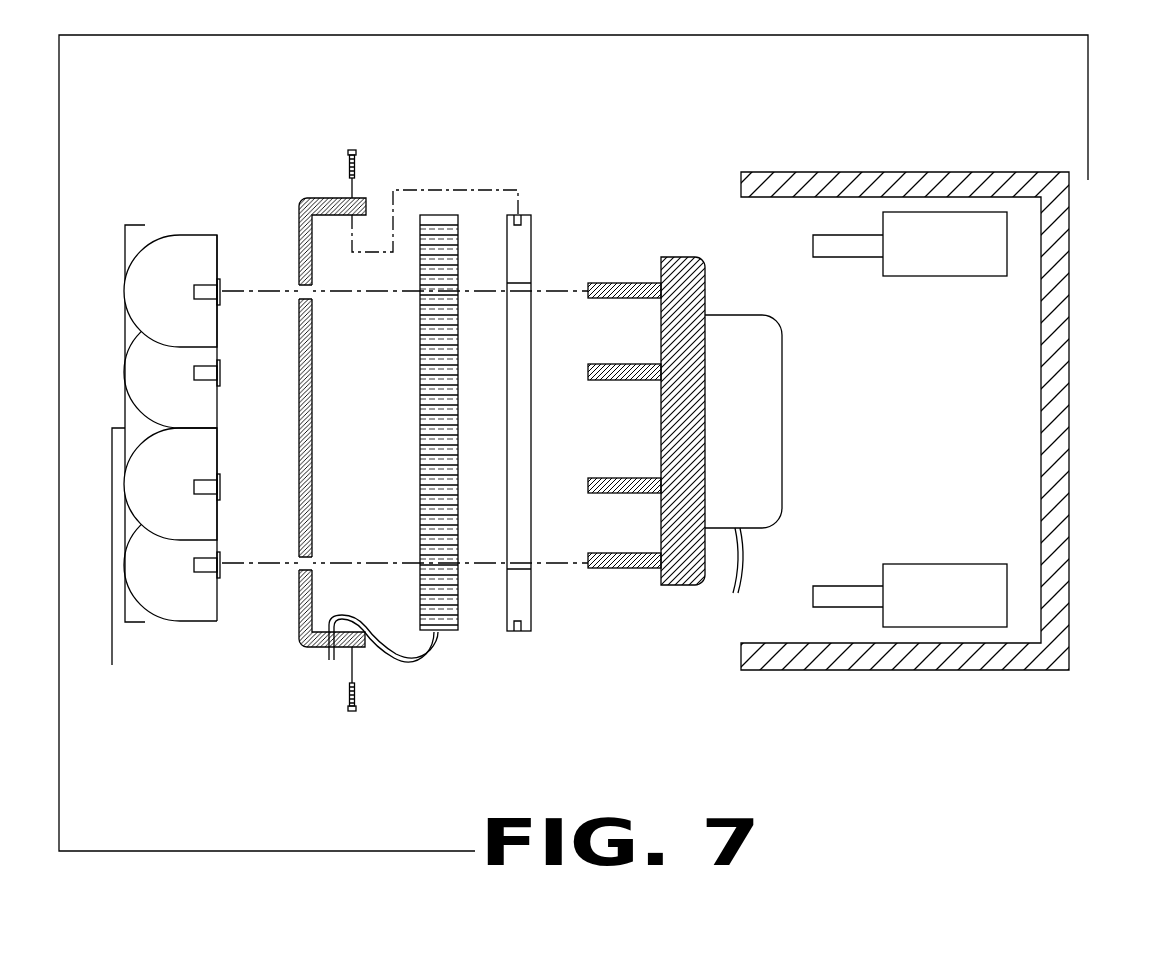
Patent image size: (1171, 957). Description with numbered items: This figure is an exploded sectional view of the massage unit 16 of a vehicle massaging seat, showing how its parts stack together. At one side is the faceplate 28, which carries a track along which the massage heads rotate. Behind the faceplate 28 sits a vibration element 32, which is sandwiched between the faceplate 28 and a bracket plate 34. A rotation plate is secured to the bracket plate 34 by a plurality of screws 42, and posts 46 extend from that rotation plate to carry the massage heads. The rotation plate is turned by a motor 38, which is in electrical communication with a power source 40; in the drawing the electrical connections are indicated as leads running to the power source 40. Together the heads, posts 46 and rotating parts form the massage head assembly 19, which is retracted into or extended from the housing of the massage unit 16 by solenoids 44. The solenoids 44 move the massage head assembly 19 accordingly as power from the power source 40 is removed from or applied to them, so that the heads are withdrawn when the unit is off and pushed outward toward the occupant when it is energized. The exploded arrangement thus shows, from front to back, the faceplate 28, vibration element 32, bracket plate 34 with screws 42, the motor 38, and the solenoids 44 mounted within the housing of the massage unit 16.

The massage unit 16 is at (1137, 118).
The massage head assembly 19 is at (710, 180).
The faceplate 28 is at (296, 232).
The vibration element 32 is at (453, 638).
The bracket plate 34 is at (510, 215).
The motor 38 is at (786, 420).
The power source 40 is at (323, 658).
The screws 42 is at (343, 152).
The solenoids 44 is at (948, 212).
The posts 46 is at (638, 570).